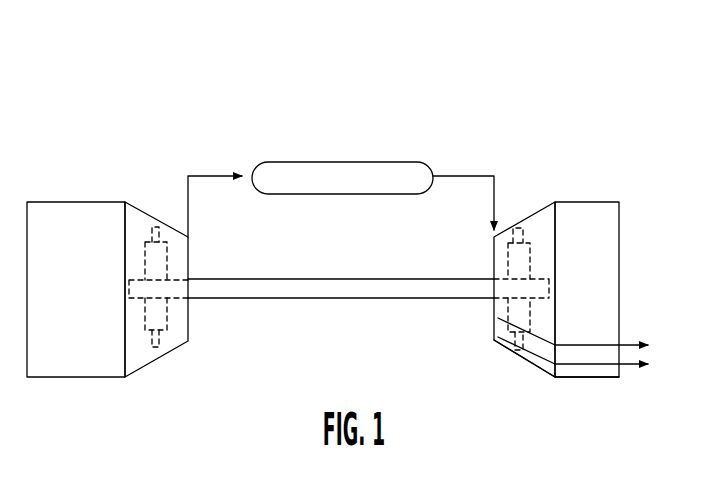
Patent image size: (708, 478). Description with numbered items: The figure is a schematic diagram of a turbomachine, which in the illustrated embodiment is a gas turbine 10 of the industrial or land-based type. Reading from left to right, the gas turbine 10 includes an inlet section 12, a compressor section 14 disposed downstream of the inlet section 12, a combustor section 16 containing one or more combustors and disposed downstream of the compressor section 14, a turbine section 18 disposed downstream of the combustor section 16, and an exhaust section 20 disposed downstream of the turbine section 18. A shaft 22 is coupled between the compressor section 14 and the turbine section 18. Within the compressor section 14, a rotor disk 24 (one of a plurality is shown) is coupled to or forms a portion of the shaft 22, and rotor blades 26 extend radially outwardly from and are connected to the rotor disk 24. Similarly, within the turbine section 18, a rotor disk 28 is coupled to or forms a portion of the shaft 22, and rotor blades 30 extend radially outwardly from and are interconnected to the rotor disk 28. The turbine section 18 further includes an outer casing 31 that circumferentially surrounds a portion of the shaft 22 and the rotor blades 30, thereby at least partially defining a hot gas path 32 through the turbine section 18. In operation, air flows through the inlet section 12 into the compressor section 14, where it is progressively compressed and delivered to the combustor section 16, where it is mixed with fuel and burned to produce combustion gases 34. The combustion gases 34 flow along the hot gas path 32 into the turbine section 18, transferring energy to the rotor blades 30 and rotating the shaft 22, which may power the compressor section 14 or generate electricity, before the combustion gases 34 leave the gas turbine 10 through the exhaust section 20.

The gas turbine 10 is at (195, 91).
The inlet section 12 is at (58, 201).
The compressor section 14 is at (145, 212).
The combustor section 16 is at (383, 161).
The turbine section 18 is at (543, 208).
The exhaust section 20 is at (595, 202).
The shaft 22 is at (310, 300).
The rotor disk 24 is at (145, 270).
The rotor blade 26 is at (151, 241).
The rotor disk 28 is at (507, 247).
The rotor blade 30 is at (518, 227).
The outer casing 31 is at (548, 375).
The hot gas path 32 is at (516, 359).
The combustion gases 34 is at (450, 177).